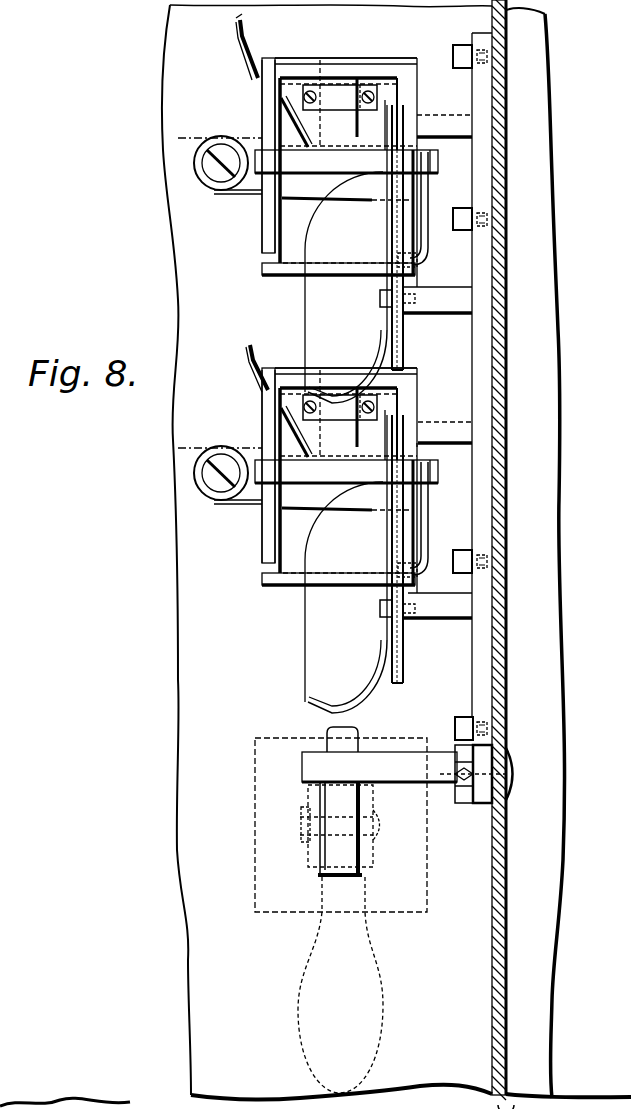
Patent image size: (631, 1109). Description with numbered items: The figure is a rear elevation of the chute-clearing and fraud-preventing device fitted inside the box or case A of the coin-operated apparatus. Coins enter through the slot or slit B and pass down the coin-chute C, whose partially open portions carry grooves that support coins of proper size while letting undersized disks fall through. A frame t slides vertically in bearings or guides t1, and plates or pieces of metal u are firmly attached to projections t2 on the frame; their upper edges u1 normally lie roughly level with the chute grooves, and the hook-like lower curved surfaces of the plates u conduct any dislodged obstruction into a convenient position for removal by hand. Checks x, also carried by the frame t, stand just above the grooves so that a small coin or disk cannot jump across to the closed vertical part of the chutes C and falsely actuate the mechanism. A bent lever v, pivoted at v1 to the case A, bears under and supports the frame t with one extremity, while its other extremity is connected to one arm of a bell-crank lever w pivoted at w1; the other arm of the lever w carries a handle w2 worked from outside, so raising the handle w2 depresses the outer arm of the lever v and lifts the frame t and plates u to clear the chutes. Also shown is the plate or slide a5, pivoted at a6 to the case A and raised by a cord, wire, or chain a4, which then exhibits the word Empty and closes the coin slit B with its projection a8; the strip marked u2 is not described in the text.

The box or case A is at (383, 692).
The slot or slit B is at (338, 63).
The coin-chute C is at (276, 231).
The cord, wire, or chain a4 is at (240, 203).
The plate or slide a5 is at (347, 344).
The pivot a6 is at (214, 176).
The projection a8 is at (340, 265).
The checks x is at (346, 316).
The plates or pieces of metal u is at (360, 409).
The upper edges of the plates u1 is at (396, 559).
The strip u2 is at (396, 245).
The frame t is at (474, 517).
The bearings or guides t1 is at (483, 55).
The projections t2 is at (437, 366).
The bent lever v is at (379, 767).
The pivot of bent lever v1 is at (471, 774).
The bell-crank lever w is at (341, 819).
The pivot of bell-crank lever w1 is at (301, 828).
The handle w2 is at (340, 985).